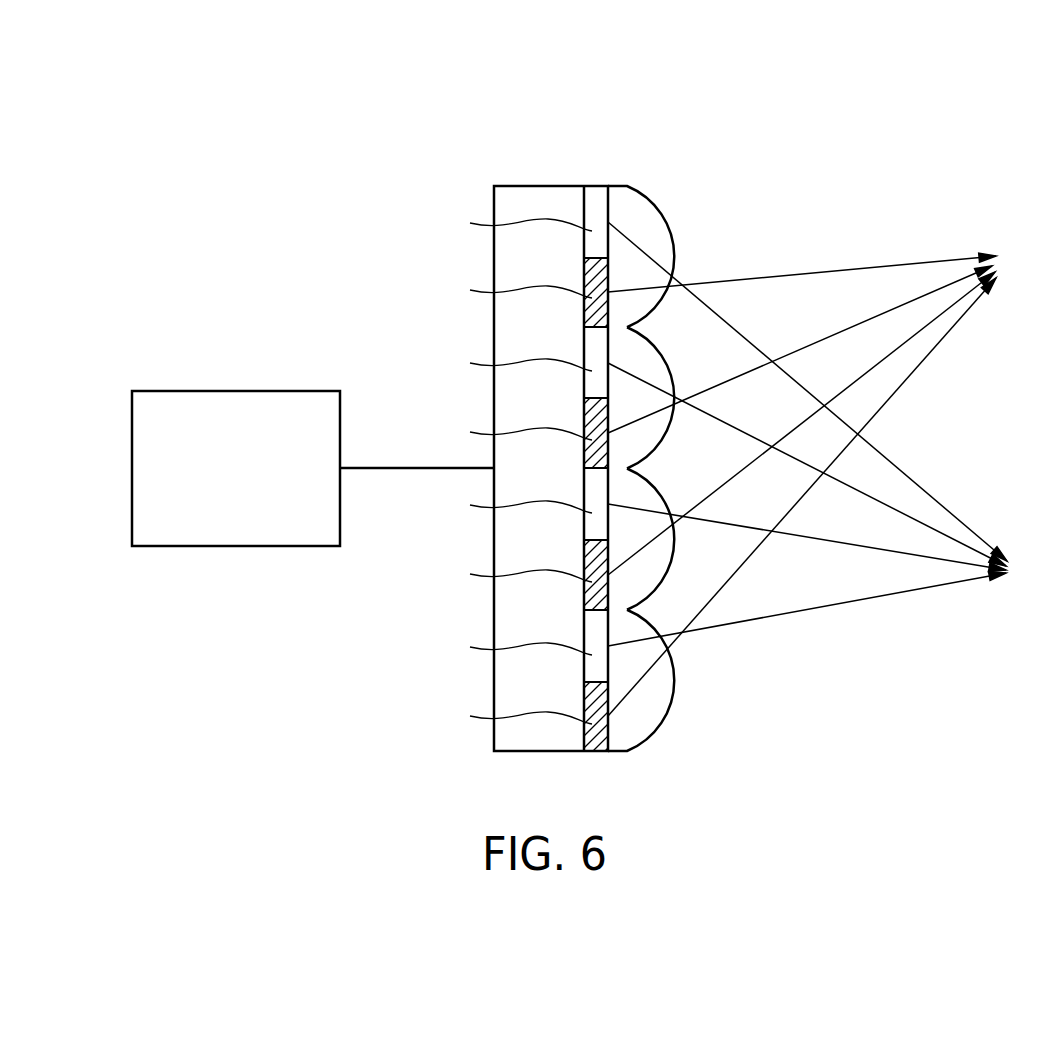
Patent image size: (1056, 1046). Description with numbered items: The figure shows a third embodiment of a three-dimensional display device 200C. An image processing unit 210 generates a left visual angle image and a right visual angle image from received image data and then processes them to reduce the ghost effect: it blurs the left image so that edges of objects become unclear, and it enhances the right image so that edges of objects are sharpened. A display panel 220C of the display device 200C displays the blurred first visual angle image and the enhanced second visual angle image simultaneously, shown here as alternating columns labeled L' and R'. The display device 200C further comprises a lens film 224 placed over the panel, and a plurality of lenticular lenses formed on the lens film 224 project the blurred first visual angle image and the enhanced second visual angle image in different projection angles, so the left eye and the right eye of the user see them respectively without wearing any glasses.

The 3D display device 200C is at (198, 128).
The image processing unit 210 is at (234, 391).
The display panel 220C is at (510, 170).
The lens film 224 is at (653, 170).